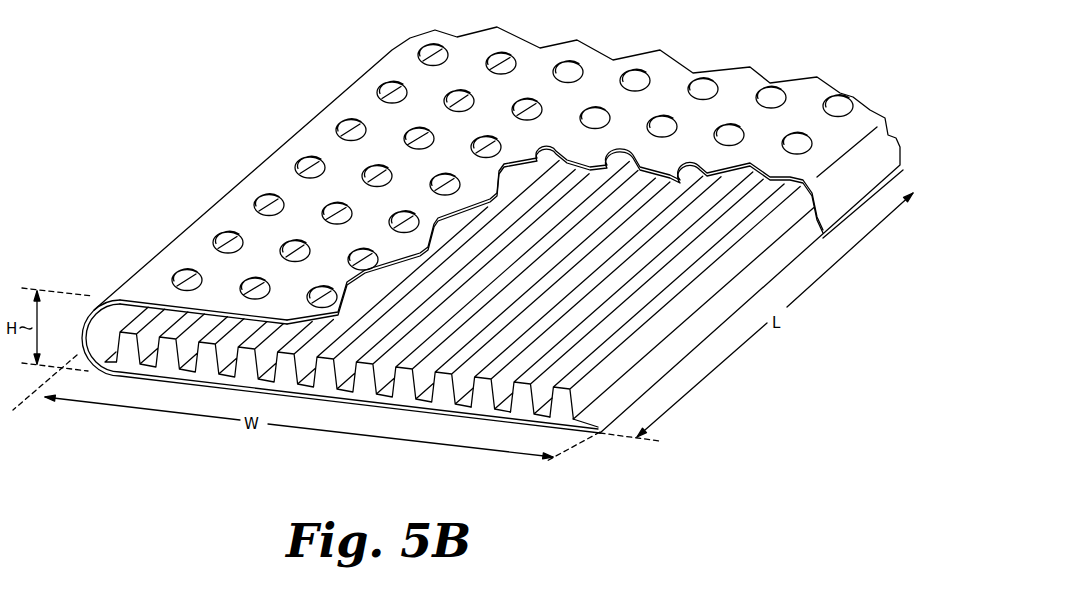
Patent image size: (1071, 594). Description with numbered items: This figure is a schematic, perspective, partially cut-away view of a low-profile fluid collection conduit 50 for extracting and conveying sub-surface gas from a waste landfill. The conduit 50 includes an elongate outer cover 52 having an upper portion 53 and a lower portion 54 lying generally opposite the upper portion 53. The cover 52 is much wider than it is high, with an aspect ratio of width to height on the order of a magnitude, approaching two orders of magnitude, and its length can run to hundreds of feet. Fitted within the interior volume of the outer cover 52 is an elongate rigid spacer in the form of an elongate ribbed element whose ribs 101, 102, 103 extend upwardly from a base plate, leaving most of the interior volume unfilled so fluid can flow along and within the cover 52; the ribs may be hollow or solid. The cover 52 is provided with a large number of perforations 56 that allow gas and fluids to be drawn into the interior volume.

The fluid collection conduit 50 is at (268, 103).
The elongate outer cover 52 is at (233, 190).
The upper portion 53 is at (498, 117).
The lower portion 54 is at (363, 397).
The perforations 56 is at (346, 117).
The rib 101 is at (580, 397).
The rib 102 is at (540, 397).
The rib 103 is at (500, 397).